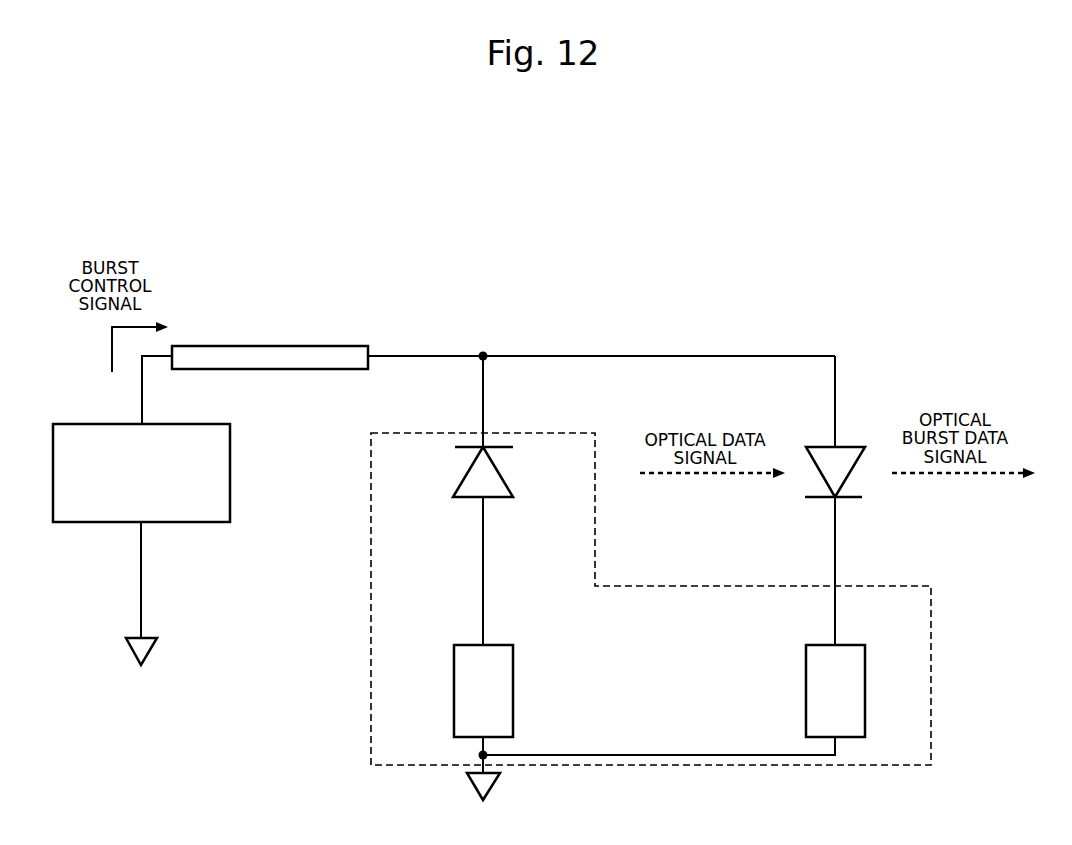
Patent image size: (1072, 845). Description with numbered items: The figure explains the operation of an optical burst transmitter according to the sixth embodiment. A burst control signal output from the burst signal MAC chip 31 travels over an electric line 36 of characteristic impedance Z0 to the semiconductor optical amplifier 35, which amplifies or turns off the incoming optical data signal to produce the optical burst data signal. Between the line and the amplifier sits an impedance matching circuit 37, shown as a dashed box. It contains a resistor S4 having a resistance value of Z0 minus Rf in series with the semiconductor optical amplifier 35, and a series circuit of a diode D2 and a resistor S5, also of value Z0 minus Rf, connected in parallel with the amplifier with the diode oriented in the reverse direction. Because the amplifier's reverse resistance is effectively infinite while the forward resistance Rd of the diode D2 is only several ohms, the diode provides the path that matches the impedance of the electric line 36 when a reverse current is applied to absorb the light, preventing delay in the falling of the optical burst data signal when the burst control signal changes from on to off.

The MAC chip for burst signals 31 is at (198, 424).
The semiconductor optical amplifier 35 is at (856, 447).
The electric line 36 is at (330, 346).
The impedance matching circuit 37 is at (370, 600).
The diode D2 is at (508, 487).
The resistor S4 is at (852, 645).
The resistor S5 is at (500, 645).